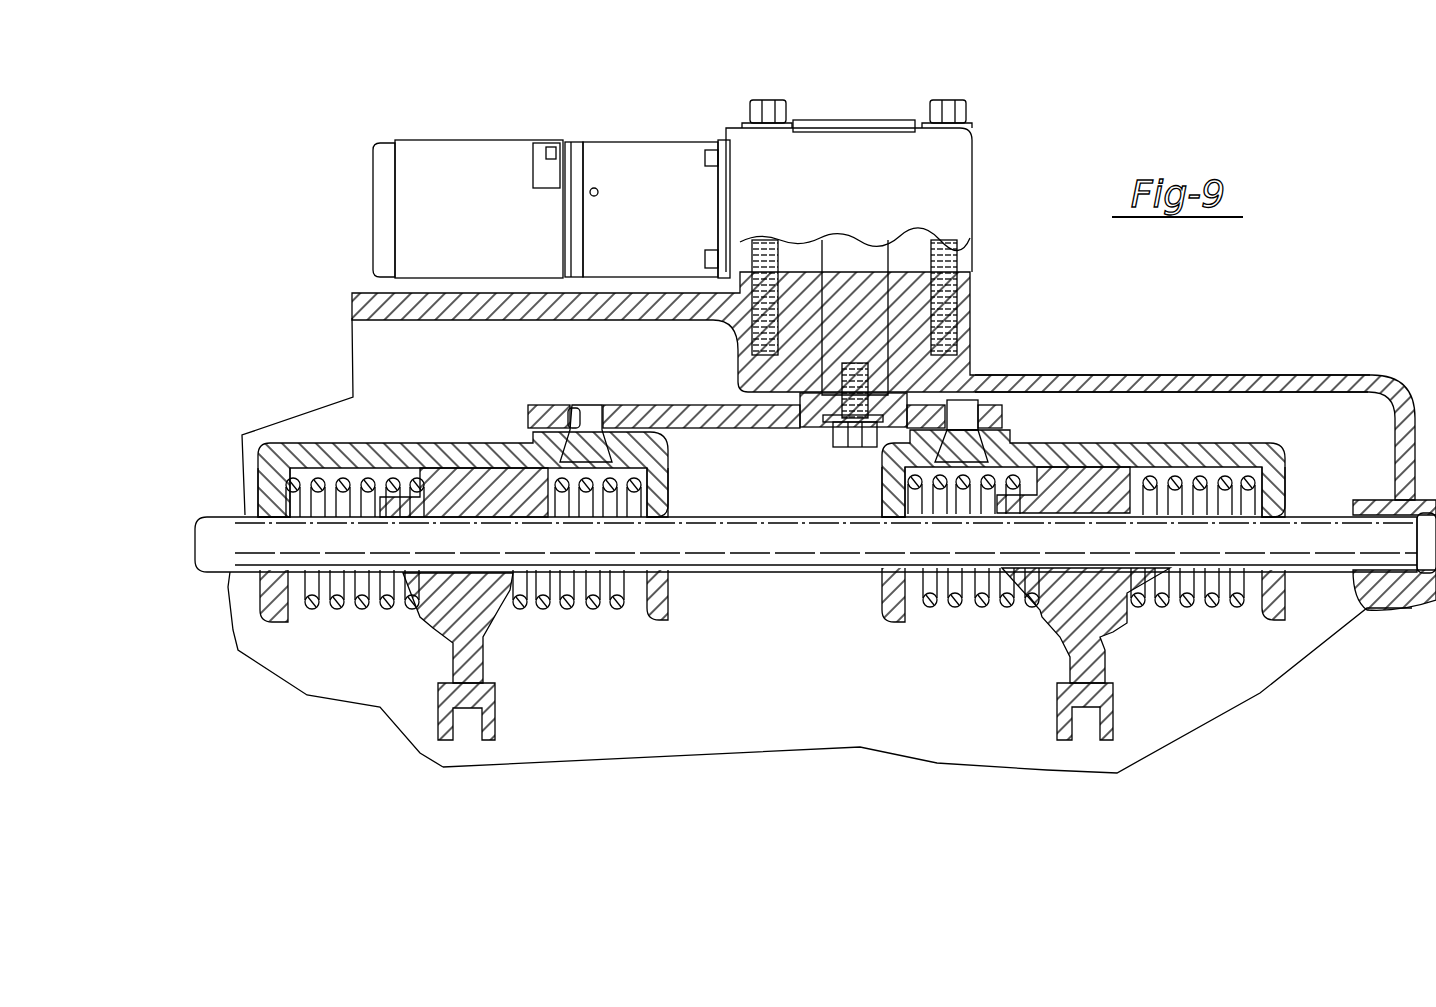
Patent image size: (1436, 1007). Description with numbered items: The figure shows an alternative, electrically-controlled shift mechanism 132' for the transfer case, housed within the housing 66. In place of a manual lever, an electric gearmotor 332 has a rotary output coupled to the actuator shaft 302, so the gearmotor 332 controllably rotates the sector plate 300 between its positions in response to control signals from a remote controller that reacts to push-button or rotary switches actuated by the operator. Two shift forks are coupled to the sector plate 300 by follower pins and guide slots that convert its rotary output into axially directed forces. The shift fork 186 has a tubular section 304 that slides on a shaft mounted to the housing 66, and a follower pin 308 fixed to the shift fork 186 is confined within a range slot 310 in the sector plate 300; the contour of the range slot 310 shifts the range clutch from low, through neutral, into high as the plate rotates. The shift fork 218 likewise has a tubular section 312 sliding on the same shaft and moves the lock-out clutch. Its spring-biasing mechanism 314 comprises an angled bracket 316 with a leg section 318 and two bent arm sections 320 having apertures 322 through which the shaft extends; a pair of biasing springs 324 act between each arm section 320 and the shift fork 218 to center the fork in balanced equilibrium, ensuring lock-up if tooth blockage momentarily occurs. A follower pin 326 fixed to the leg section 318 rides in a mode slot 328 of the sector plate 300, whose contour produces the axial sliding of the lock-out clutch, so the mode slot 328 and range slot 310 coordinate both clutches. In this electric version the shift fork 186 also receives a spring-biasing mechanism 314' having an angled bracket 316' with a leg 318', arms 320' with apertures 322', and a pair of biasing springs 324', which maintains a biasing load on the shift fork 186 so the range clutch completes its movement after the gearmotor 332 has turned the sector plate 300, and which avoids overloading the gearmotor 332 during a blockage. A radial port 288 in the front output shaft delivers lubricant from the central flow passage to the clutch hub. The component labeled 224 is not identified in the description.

The electric gearmotor 332 is at (652, 133).
The actuator shaft 302 is at (860, 265).
The follower pin 326 is at (962, 400).
The mode slot 328 is at (986, 440).
The shift mechanism 132' is at (832, 505).
The housing 66 is at (1086, 377).
The spring-biasing mechanism 314 is at (1100, 417).
The spring-biasing mechanism 314' is at (463, 438).
The angled bracket 316 is at (1083, 456).
The angled bracket 316' is at (463, 427).
The leg section 318 is at (1063, 454).
The leg 318' is at (464, 448).
The range slot 310 is at (570, 410).
The follower pin 308 is at (592, 412).
The sector plate 300 is at (703, 402).
The bent arm sections 320 is at (1077, 526).
The arms 320' is at (449, 521).
The apertures 322 is at (1118, 594).
The apertures 322' is at (475, 565).
The biasing springs 324 is at (1074, 595).
The biasing springs 324' is at (463, 575).
The tubular section 304 is at (420, 600).
The shift fork 186 is at (503, 701).
The radial port 288 is at (808, 550).
The tubular section 312 is at (1020, 607).
The shift fork 218 is at (1090, 632).
The frame 224 is at (1090, 745).